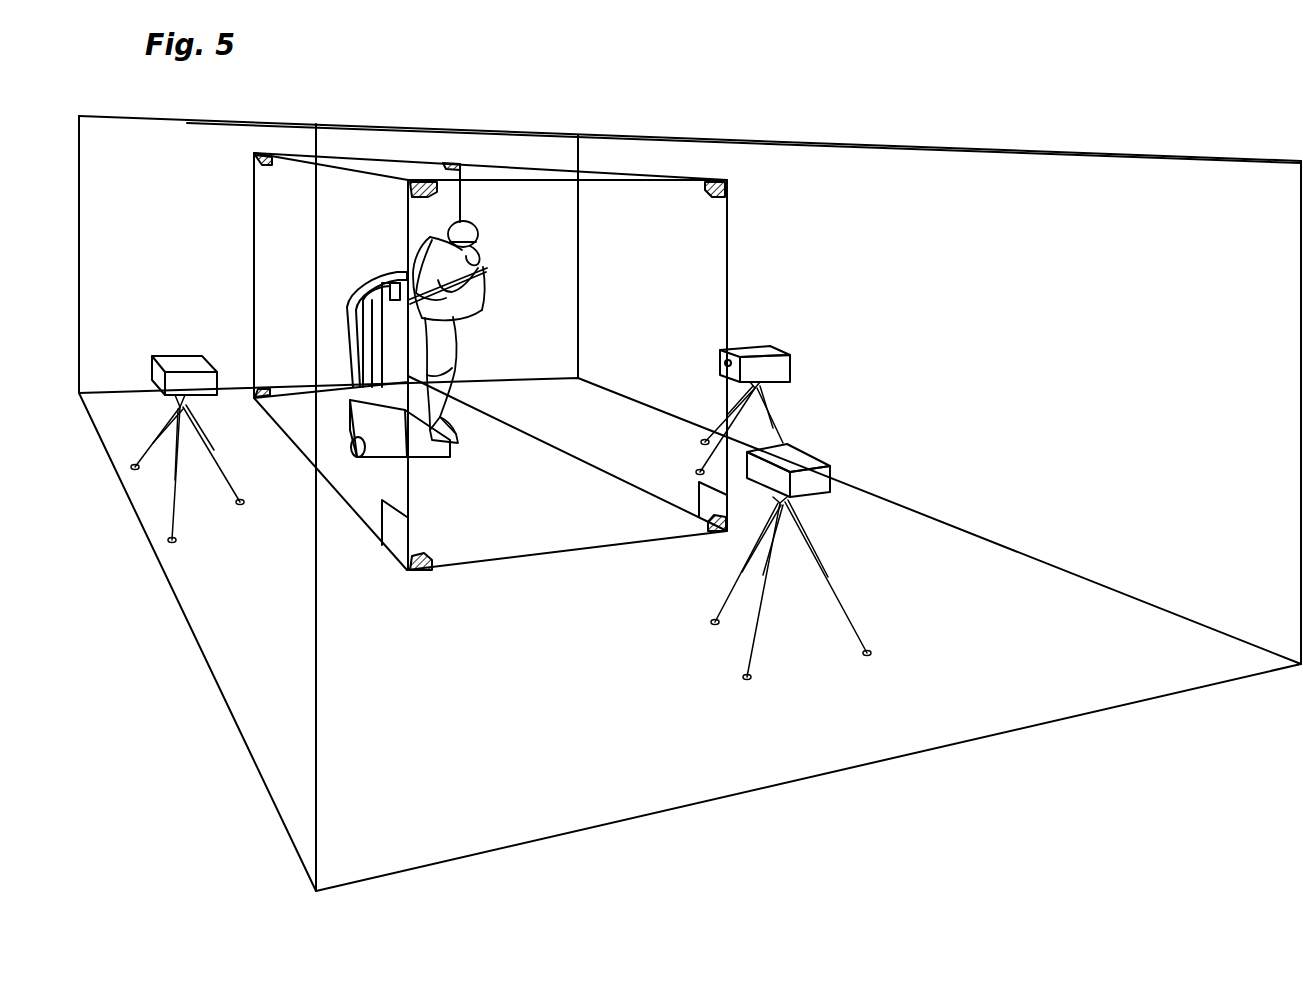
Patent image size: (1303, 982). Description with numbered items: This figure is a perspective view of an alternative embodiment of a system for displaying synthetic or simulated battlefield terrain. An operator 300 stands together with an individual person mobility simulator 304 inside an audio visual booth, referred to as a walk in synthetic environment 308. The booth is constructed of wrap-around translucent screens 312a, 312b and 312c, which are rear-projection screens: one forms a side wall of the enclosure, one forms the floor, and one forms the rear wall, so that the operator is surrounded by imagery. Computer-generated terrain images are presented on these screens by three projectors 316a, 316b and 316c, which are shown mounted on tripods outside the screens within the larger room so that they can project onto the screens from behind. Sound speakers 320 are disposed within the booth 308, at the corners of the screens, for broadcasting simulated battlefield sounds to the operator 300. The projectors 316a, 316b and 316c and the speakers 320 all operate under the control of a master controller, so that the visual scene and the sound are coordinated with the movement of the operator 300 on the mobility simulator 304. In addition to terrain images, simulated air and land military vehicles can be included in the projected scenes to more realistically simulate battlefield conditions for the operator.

The operator 300 is at (488, 281).
The individual person mobility simulator 304 is at (373, 273).
The walk in synthetic environment 308 is at (730, 288).
The translucent screen 312a is at (276, 229).
The translucent screen 312b is at (487, 520).
The translucent screen 312c is at (537, 163).
The projector 316a is at (171, 349).
The projector 316b is at (827, 497).
The projector 316c is at (793, 365).
The sound speakers 320 is at (398, 535).